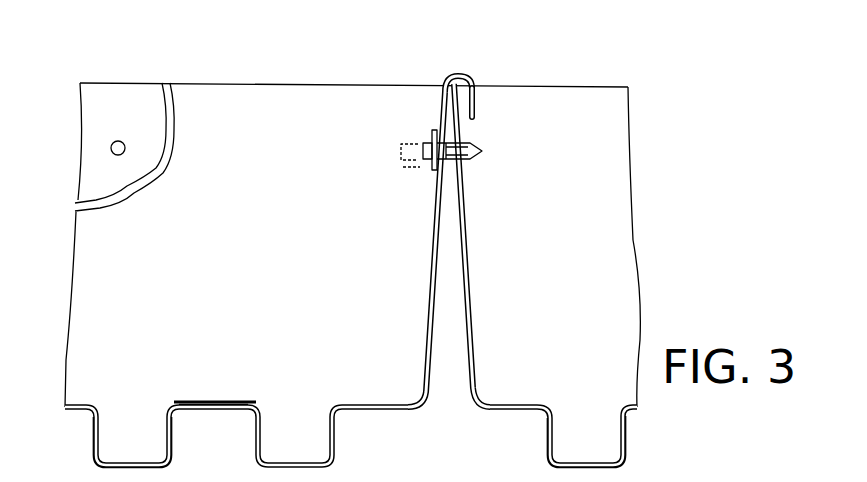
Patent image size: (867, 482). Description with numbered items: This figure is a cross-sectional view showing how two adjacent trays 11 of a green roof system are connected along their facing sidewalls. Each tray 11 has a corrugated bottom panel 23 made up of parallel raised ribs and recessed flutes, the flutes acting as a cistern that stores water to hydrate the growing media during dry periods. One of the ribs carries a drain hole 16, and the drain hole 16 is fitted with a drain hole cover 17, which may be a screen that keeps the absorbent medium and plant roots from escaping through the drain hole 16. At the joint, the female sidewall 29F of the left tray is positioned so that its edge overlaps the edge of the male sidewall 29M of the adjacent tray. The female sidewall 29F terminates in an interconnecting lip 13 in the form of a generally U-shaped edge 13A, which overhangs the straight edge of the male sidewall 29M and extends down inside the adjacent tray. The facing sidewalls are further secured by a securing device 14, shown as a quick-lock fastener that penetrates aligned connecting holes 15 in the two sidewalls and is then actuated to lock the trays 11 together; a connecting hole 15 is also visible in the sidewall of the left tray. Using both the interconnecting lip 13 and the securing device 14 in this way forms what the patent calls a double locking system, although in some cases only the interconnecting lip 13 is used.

The tray 11 is at (233, 63).
The interconnecting lip 13 is at (438, 64).
The U-shaped edge 13A is at (468, 80).
The securing device 14 is at (417, 131).
The connecting hole 15 is at (463, 160).
The drain hole 16 is at (205, 403).
The drain hole cover 17 is at (235, 393).
The corrugated bottom panel 23 is at (76, 454).
The female sidewall 29F is at (427, 311).
The male sidewall 29M is at (470, 302).